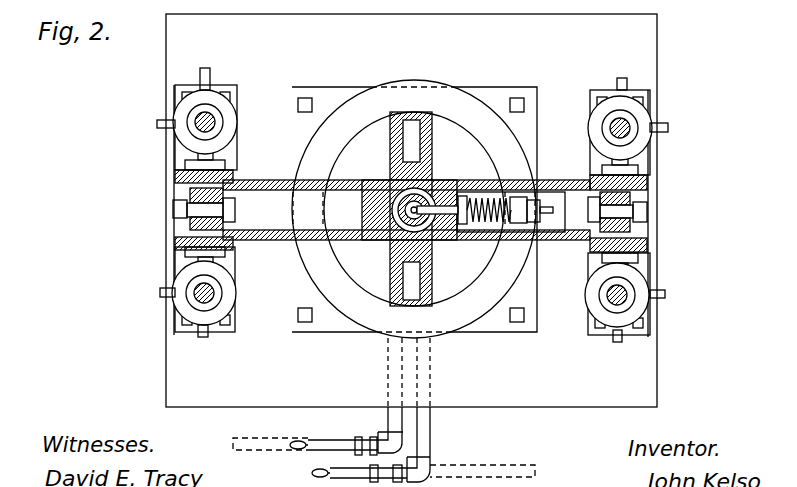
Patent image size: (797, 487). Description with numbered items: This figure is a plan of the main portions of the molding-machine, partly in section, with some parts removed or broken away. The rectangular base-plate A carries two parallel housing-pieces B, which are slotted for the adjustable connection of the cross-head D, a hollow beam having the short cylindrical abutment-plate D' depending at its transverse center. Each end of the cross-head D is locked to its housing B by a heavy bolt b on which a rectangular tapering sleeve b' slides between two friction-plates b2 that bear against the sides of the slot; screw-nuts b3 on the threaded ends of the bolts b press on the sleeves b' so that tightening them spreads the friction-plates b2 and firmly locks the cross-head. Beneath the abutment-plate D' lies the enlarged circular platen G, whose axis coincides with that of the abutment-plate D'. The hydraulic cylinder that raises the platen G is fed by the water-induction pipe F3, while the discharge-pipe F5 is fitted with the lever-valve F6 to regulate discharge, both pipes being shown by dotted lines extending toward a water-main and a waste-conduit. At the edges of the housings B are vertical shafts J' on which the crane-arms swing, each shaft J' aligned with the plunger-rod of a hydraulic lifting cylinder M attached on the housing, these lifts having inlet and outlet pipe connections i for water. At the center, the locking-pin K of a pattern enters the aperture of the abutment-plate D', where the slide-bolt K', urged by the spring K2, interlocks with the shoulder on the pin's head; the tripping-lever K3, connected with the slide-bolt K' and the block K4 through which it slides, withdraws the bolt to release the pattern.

The base-plate A is at (411, 210).
The platen G is at (465, 97).
The abutment-plate D' is at (414, 209).
The cross-head D is at (406, 230).
The locking-pin K is at (443, 178).
The slide-bolt K' is at (484, 191).
The spring K2 is at (478, 232).
The tripping-lever K3 is at (525, 198).
The block K4 is at (536, 200).
The housing-pieces B is at (178, 161).
The bolt b is at (411, 209).
The sleeve b' is at (415, 214).
The friction-plates b2 is at (190, 191).
The screw-nuts b3 is at (176, 210).
The cylinder M is at (173, 133).
The vertical shafts J' is at (429, 208).
The inlet and outlet pipe connections i is at (211, 72).
The water-induction pipe F3 is at (431, 445).
The discharge-pipe F5 is at (390, 418).
The lever-valve F6 is at (355, 442).